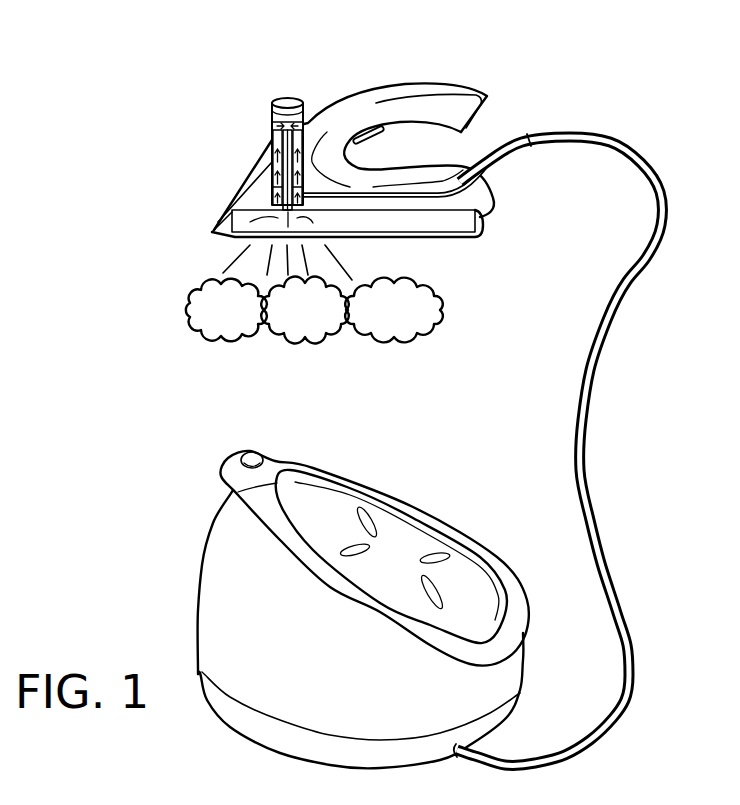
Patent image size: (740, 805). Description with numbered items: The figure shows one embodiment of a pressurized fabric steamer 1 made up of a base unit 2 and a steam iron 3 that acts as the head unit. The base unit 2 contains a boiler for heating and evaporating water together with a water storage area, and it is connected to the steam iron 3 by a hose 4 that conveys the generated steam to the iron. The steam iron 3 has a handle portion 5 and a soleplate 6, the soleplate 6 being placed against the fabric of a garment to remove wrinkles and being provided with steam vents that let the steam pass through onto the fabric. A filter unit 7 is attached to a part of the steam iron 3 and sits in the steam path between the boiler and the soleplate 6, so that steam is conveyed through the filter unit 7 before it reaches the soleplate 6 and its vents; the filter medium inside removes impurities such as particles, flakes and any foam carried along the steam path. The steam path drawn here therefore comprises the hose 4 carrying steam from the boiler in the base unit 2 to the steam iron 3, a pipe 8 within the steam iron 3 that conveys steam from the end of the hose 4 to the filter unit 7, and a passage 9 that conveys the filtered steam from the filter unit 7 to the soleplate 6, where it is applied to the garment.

The pressurized fabric steamer 1 is at (147, 88).
The base unit 2 is at (212, 598).
The steam iron 3 is at (487, 70).
The hose 4 is at (597, 538).
The handle portion 5 is at (378, 110).
The soleplate 6 is at (440, 243).
The filter unit 7 is at (272, 118).
The pipe 8 is at (492, 198).
The passage 9 is at (240, 218).